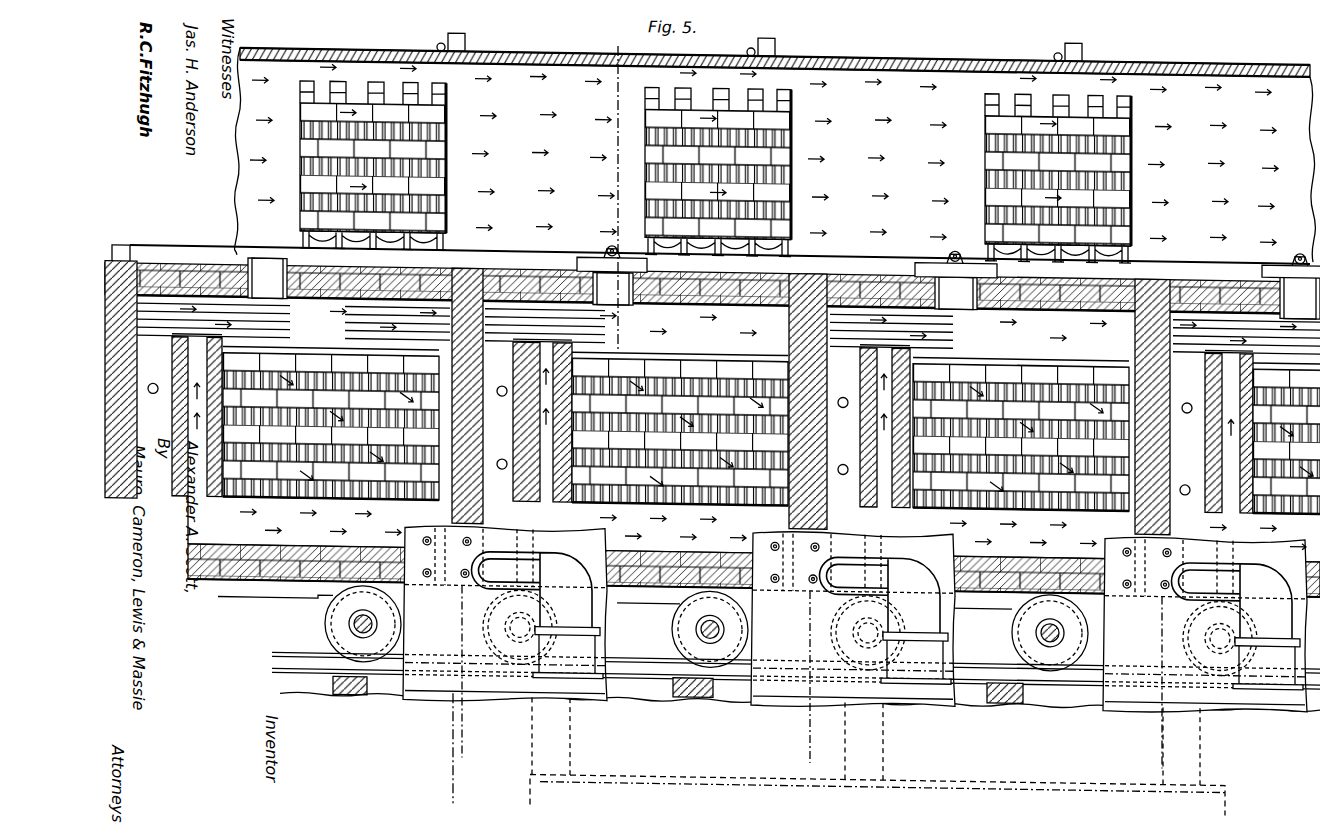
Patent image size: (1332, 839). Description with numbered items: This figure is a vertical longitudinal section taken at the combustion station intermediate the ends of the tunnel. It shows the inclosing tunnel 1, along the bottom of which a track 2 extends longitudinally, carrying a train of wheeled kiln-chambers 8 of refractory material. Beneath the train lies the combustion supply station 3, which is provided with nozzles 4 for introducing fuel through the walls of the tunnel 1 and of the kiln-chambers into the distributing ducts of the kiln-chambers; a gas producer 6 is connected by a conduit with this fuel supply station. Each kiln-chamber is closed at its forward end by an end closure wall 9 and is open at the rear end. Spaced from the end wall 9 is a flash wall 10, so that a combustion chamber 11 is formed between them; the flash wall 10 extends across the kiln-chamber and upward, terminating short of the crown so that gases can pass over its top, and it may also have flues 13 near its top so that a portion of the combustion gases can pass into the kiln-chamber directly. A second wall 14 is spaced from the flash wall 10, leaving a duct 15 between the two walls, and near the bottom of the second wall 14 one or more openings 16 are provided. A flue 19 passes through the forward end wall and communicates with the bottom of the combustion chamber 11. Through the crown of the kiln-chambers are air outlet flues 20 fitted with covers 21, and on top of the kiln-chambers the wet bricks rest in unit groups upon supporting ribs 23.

The inclosing tunnel 1 is at (945, 50).
The track 2 is at (636, 657).
The combustion supply station 3 is at (752, 779).
The nozzles 4 is at (888, 621).
The gas producer 6 is at (446, 798).
The wheeled kiln-chambers 8 is at (297, 578).
The end closure wall 9 is at (637, 398).
The flash wall 10 is at (229, 525).
The combustion chamber 11 is at (153, 396).
The flues 13 is at (172, 348).
The second wall 14 is at (262, 390).
The duct 15 is at (265, 349).
The openings 16 is at (1132, 142).
The flue 19 is at (474, 514).
The air outlet flues 20 is at (784, 287).
The covers 21 is at (607, 244).
The supporting ribs 23 is at (447, 240).